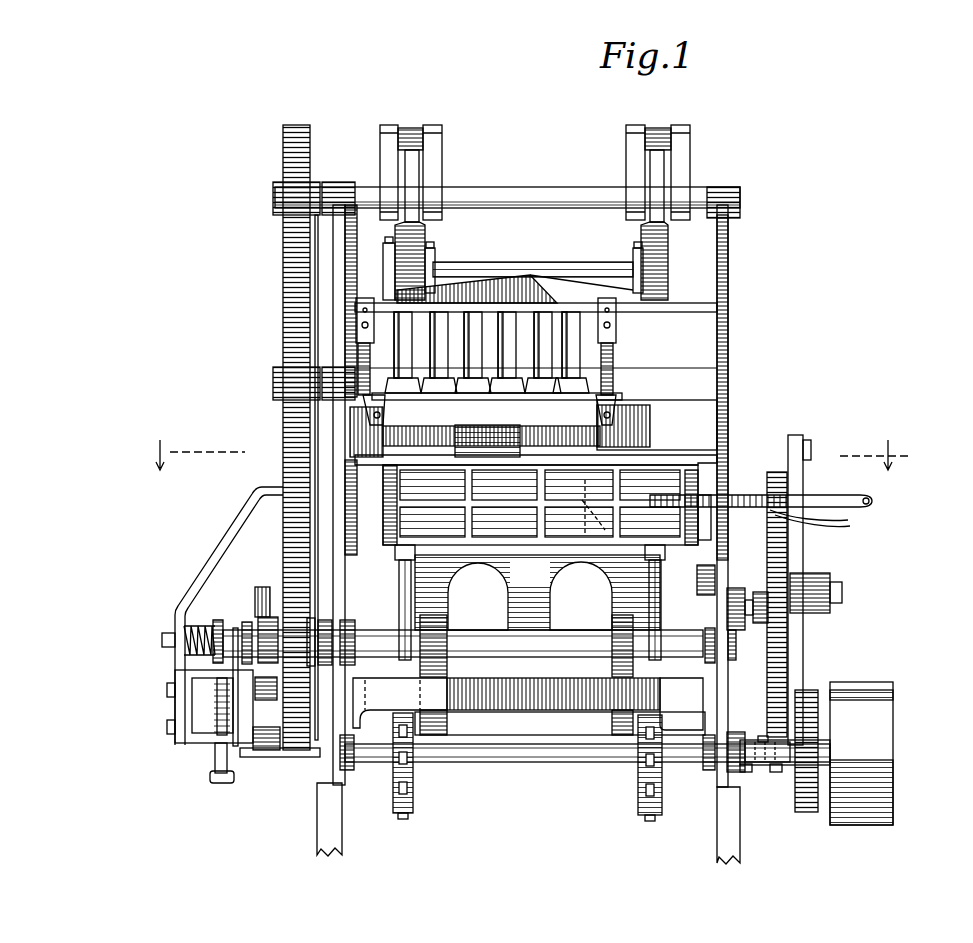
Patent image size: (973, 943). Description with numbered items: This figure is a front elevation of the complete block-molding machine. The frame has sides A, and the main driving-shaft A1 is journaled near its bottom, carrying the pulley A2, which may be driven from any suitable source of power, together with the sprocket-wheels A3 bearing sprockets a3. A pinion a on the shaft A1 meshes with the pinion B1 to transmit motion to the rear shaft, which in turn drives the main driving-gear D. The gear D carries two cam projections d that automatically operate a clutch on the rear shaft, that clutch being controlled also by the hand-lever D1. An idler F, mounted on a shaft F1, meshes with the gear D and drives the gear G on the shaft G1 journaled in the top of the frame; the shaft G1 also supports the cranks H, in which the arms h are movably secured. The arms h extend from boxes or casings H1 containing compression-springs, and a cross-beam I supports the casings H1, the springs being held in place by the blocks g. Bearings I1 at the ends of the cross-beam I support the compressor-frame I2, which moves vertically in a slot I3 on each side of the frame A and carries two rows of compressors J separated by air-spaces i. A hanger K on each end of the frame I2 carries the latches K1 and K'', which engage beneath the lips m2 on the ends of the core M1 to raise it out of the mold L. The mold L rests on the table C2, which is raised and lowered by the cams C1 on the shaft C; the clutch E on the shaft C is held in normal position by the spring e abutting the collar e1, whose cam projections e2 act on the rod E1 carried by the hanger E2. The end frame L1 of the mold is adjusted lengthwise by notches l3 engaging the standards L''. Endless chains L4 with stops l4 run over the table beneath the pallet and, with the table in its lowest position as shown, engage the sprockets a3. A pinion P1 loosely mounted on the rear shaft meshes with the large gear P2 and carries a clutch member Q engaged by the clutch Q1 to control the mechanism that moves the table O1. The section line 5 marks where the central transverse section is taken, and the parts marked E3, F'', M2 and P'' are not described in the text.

The frame side A is at (335, 467).
The main driving-shaft A1 is at (552, 770).
The pulley A2 is at (883, 735).
The sprocket-wheel A3 is at (414, 795).
The pinion a is at (830, 775).
The sprocket a3 is at (638, 788).
The pinion B1 is at (818, 692).
The shaft C is at (537, 600).
The cam C1 is at (477, 600).
The table C2 is at (532, 574).
The driving-gear D is at (290, 547).
The hand-lever D1 is at (185, 667).
The cam projection d is at (262, 603).
The clutch E is at (258, 622).
The rod E1 is at (222, 715).
The hanger E2 is at (222, 685).
The foot E3 is at (210, 778).
The spring e is at (183, 640).
The circumferential collar e1 is at (205, 612).
The cam projection e2 is at (185, 625).
The idler F is at (463, 345).
The shaft F1 is at (245, 448).
The slide block F'' is at (611, 402).
The gear G is at (298, 233).
The shaft G1 is at (272, 198).
The crank H is at (405, 145).
The casing H1 is at (430, 245).
The arm h is at (412, 172).
The block g is at (437, 255).
The cross-beam I is at (489, 301).
The bearing I1 is at (778, 265).
The compressor-frame I2 is at (512, 303).
The slot I3 is at (782, 295).
The air-space i is at (556, 384).
The compressor J is at (430, 380).
The hanger K is at (482, 341).
The latch K1 is at (350, 395).
The latch K'' is at (708, 337).
The mold L is at (521, 507).
The frame L1 is at (832, 496).
The standard L'' is at (646, 507).
The endless chain L4 is at (529, 706).
The notch l3 is at (836, 520).
The stop l4 is at (541, 602).
The core M1 is at (487, 441).
The plungers M2 is at (478, 380).
The projecting lip m2 is at (795, 380).
The table O1 is at (669, 430).
The pinion P1 is at (770, 774).
The large gear P2 is at (785, 562).
The hub P'' is at (819, 604).
The clutch member Q is at (755, 772).
The clutch Q1 is at (760, 737).
The section line 5 is at (530, 458).